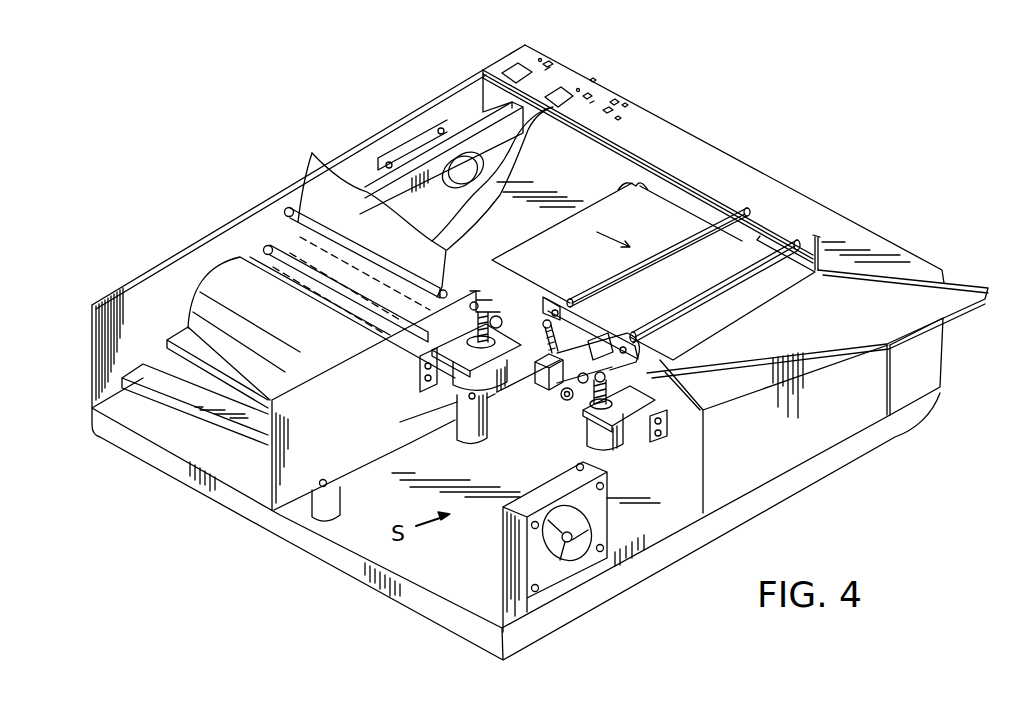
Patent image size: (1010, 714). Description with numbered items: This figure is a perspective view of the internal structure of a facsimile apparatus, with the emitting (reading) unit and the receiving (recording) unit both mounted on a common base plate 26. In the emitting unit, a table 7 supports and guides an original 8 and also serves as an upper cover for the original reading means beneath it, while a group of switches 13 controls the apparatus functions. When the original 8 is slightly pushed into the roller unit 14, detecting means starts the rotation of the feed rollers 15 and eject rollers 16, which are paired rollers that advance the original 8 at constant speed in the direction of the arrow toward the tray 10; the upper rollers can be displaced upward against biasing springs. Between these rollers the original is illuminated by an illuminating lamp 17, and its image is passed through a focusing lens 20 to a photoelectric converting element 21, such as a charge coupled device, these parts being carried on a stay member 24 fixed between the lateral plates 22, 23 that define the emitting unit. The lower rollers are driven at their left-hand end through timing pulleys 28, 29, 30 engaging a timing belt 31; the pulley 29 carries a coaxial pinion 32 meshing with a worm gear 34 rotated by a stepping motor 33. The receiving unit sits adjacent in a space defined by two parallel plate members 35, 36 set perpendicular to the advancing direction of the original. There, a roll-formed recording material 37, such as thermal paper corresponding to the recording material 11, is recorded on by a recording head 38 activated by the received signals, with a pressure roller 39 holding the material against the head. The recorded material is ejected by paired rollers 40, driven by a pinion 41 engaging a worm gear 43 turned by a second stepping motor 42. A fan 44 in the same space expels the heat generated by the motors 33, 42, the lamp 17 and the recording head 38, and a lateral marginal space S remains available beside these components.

The table 7 is at (597, 152).
The original 8 is at (783, 288).
The tray 10 is at (957, 297).
The recording material 11 is at (317, 168).
The group of switches 13 is at (573, 73).
The roller unit 14 is at (790, 193).
The feed rollers 15 is at (700, 229).
The eject rollers 16 is at (755, 263).
The illuminating lamp 17 is at (567, 357).
The focusing lens 20 is at (472, 187).
The photoelectric converting element 21 is at (412, 140).
The lateral plate 22 is at (490, 89).
The lateral plate 23 is at (517, 373).
The stay member 24 is at (473, 127).
The base plate 26 is at (443, 590).
The timing pulley 28 is at (537, 315).
The timing pulley 29 is at (645, 355).
The timing pulley 30 is at (563, 397).
The timing belt 31 is at (590, 340).
The pinion 32 is at (597, 348).
The stepping motor 33 is at (605, 442).
The worm gear 34 is at (585, 405).
The plate member 35 is at (118, 290).
The plate member 36 is at (290, 462).
The roll-formed recording material 37 is at (208, 312).
The recording head 38 is at (290, 240).
The pressure roller 39 is at (268, 268).
The paired rollers 40 is at (327, 235).
The pinion 41 is at (497, 312).
The stepping motor 42 is at (463, 382).
The worm gear 43 is at (478, 322).
The fan 44 is at (600, 530).